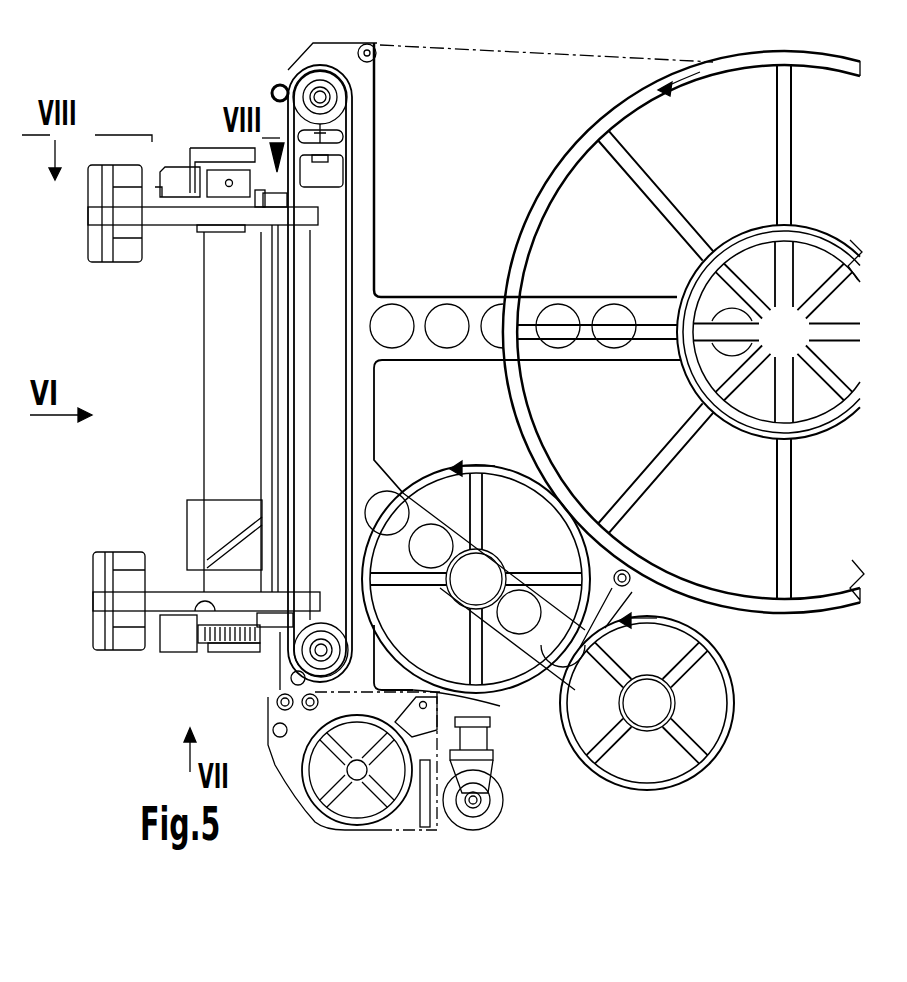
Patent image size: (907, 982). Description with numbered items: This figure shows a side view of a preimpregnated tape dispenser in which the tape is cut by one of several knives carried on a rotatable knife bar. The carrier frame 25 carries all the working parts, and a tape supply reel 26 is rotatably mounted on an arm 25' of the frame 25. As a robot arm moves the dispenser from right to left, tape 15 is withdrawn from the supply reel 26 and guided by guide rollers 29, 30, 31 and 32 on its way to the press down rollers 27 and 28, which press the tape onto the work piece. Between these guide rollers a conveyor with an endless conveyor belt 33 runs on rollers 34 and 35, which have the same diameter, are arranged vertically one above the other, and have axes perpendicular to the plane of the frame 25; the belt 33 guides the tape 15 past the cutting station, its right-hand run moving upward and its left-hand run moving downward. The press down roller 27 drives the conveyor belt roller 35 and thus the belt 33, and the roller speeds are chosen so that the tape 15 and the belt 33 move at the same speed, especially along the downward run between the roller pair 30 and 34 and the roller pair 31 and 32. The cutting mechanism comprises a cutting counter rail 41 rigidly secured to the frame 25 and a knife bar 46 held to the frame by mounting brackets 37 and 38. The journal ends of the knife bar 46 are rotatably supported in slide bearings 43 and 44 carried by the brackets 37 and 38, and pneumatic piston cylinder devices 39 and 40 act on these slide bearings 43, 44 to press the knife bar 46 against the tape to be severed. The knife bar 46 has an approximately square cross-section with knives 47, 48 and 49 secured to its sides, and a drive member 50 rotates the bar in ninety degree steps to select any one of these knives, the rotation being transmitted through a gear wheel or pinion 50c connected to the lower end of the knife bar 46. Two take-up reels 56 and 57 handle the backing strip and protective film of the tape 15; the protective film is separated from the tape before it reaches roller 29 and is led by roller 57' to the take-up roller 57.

The tape 15 is at (510, 56).
The carrier frame 25 is at (527, 366).
The arm of the frame 25' is at (561, 299).
The tape supply reel 26 is at (848, 68).
The press down roller 27 is at (372, 818).
The press down roller 28 is at (495, 795).
The guide roller 29 is at (378, 60).
The guide roller 30 is at (279, 84).
The guide roller 31 is at (278, 698).
The guide roller 32 is at (478, 705).
The endless conveyor belt 33 is at (351, 340).
The conveyor belt roller 34 is at (347, 97).
The conveyor belt roller 35 is at (338, 632).
The mounting bracket 37 is at (172, 226).
The mounting bracket 38 is at (168, 592).
The pneumatic piston cylinder device 39 is at (122, 265).
The pneumatic piston cylinder device 40 is at (122, 560).
The cutting counter rail 41 is at (305, 393).
The slide bearing 43 is at (218, 232).
The slide bearing 44 is at (190, 653).
The knife bar 46 is at (204, 335).
The knife 47 is at (195, 505).
The knife 48 is at (240, 525).
The knife 49 is at (261, 338).
The drive member 50 is at (158, 670).
The gear wheel or pinion 50c is at (218, 645).
The take-up reel 56 is at (427, 485).
The take-up reel 57 is at (662, 706).
The roller 57' is at (632, 576).